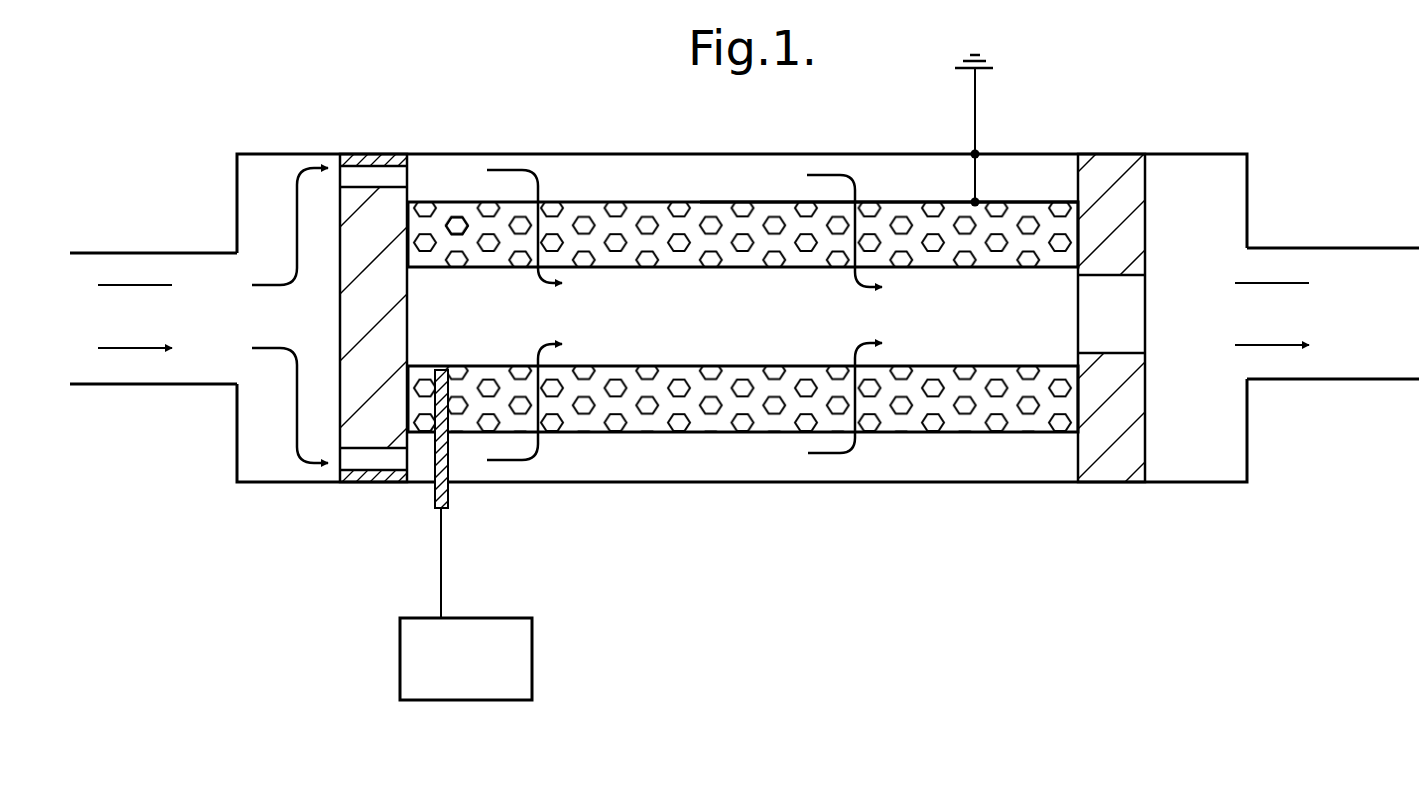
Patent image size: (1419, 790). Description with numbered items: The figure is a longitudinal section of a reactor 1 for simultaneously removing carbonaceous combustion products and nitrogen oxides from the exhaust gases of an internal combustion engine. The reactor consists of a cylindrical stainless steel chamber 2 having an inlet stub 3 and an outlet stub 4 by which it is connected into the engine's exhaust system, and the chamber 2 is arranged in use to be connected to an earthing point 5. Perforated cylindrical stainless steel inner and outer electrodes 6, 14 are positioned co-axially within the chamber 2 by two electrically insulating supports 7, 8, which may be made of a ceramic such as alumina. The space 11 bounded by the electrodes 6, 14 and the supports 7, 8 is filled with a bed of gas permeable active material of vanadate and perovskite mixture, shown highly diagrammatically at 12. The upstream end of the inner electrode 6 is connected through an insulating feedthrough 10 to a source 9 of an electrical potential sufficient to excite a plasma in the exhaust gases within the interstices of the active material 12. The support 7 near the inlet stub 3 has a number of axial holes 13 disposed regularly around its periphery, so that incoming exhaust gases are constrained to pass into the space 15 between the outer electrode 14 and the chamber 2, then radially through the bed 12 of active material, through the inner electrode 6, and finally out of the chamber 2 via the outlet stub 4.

The reactor 1 is at (705, 502).
The chamber 2 is at (822, 483).
The inlet stub 3 is at (142, 252).
The outlet stub 4 is at (1338, 248).
The earthing point 5 is at (978, 115).
The inner electrode 6 is at (953, 370).
The insulating support 7 is at (375, 437).
The insulating support 8 is at (1117, 170).
The source of electrical potential 9 is at (533, 667).
The insulating feedthrough 10 is at (452, 497).
The space 11 is at (743, 184).
The bed of gas permeable active material 12 is at (455, 217).
The axial holes 13 is at (383, 321).
The outer electrode 14 is at (768, 205).
The space 15 is at (903, 177).